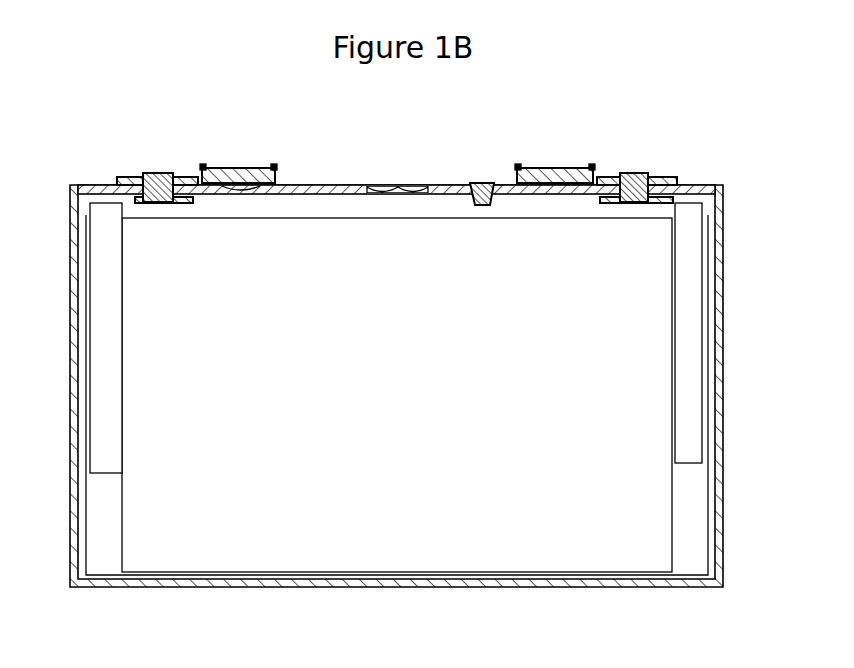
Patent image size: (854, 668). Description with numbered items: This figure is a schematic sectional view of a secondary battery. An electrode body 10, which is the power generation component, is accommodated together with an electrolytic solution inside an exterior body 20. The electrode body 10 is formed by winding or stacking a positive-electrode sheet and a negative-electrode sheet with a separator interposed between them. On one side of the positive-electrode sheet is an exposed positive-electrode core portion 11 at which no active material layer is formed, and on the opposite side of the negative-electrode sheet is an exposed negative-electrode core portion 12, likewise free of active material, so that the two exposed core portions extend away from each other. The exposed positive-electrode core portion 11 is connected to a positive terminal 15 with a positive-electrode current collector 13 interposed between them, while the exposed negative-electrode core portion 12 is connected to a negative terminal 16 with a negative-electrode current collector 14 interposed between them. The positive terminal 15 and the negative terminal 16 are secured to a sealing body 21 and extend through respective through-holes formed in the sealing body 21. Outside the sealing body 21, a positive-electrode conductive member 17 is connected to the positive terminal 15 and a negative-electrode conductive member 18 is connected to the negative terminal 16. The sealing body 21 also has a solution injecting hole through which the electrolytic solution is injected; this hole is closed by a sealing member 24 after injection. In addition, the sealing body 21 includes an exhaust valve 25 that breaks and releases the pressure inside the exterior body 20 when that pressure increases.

The electrode body 10 is at (455, 510).
The exposed positive-electrode core portion 11 is at (688, 513).
The exposed negative-electrode core portion 12 is at (103, 513).
The positive-electrode current collector 13 is at (688, 312).
The negative-electrode current collector 14 is at (103, 342).
The positive terminal 15 is at (636, 172).
The negative terminal 16 is at (159, 172).
The positive-electrode conductive member 17 is at (556, 166).
The negative-electrode conductive member 18 is at (239, 166).
The exterior body 20 is at (726, 244).
The sealing body 21 is at (326, 183).
The sealing member 24 is at (487, 182).
The exhaust valve 25 is at (412, 185).